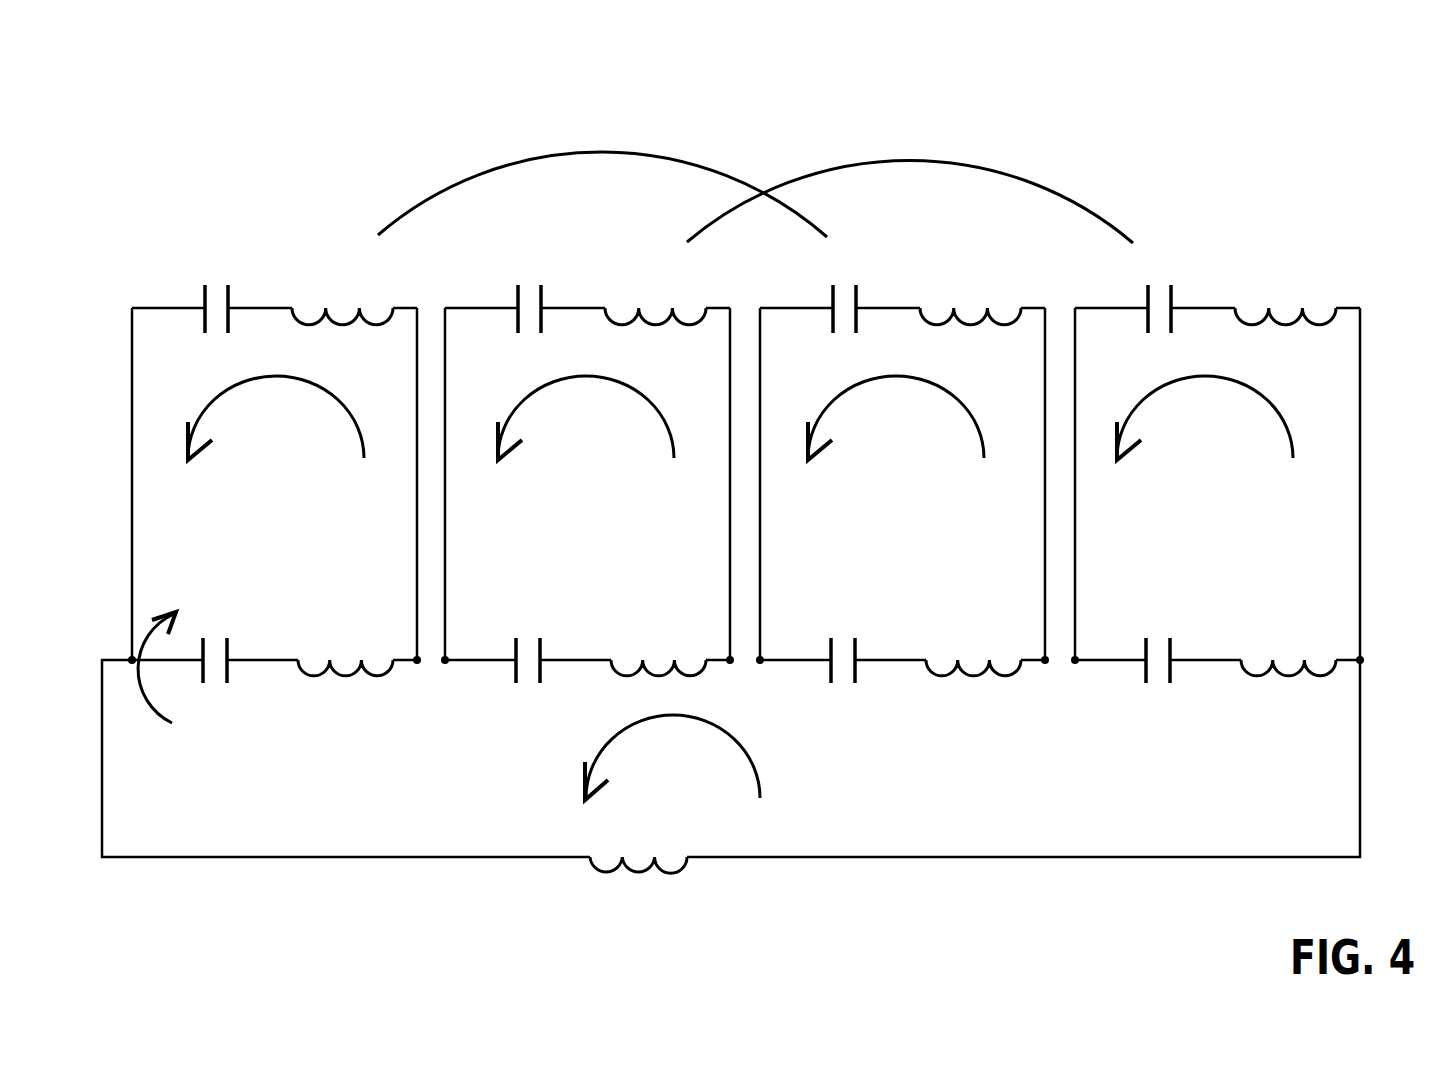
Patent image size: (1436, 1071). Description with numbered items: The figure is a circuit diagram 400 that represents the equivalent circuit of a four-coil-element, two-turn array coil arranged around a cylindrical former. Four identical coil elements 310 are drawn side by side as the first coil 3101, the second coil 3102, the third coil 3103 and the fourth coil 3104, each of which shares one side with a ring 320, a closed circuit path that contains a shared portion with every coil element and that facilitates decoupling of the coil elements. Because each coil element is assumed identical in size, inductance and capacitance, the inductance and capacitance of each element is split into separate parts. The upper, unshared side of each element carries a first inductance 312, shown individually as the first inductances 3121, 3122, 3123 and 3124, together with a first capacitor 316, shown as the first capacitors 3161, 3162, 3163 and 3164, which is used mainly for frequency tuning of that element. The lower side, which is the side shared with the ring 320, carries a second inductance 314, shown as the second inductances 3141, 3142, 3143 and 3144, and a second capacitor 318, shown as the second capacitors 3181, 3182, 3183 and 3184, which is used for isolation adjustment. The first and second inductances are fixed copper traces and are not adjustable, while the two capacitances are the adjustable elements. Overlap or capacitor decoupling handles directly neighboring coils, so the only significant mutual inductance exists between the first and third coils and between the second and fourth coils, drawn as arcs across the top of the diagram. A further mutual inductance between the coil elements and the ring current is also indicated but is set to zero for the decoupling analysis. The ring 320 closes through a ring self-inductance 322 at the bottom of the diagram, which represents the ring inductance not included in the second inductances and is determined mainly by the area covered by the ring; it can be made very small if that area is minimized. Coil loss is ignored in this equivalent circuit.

The circuit diagram 400 is at (1097, 86).
The coil elements 310 is at (746, 431).
The coil 1 3101 is at (291, 229).
The coil 2 3102 is at (587, 431).
The coil 3 3103 is at (902, 431).
The coil 4 3104 is at (1217, 431).
The inductance L1 312 is at (809, 335).
The inductance L1 of coil 1 3121 is at (342, 324).
The inductance L1 of coil 2 3122 is at (650, 335).
The inductance L1 of coil 3 3123 is at (965, 335).
The inductance L1 of coil 4 3124 is at (1280, 335).
The inductance L2 314 is at (809, 686).
The inductance L2 of coil 1 3141 is at (340, 676).
The inductance L2 of coil 2 3142 is at (651, 686).
The inductance L2 of coil 3 3143 is at (966, 686).
The inductance L2 of coil 4 3144 is at (1281, 686).
The capacitor C1 316 is at (656, 327).
The capacitor C1 of coil 1 3161 is at (205, 333).
The capacitor C1 of coil 2 3162 is at (498, 327).
The capacitor C1 of coil 3 3163 is at (813, 327).
The capacitor C1 of coil 4 3164 is at (1128, 327).
The capacitor C2 318 is at (730, 646).
The capacitor C2 of coil 1 3181 is at (228, 638).
The capacitor C2 of coil 2 3182 is at (571, 646).
The capacitor C2 of coil 3 3183 is at (886, 646).
The capacitor C2 of coil 4 3184 is at (1201, 646).
The ring 320 is at (731, 801).
The self-inductance L3 322 is at (594, 873).